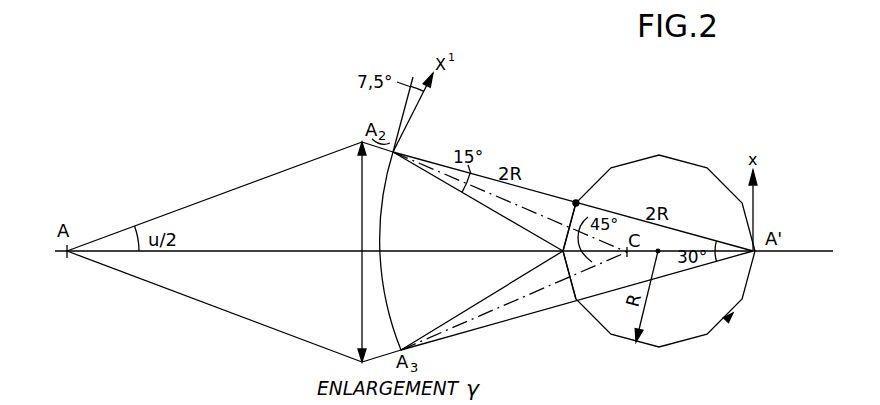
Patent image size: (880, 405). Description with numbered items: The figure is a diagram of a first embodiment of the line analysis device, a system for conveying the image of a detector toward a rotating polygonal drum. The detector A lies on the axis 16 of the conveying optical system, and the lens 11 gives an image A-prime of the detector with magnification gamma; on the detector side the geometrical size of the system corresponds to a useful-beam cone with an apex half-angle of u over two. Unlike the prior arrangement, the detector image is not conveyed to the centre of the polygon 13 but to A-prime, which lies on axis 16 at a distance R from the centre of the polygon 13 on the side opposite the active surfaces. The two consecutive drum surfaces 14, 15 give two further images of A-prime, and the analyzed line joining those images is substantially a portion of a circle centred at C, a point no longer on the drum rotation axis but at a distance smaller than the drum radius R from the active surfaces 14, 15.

The lens 11 is at (360, 188).
The polygon 13 is at (681, 162).
The drum surface 14 is at (574, 212).
The drum surface 15 is at (574, 292).
The axis 16 is at (272, 250).